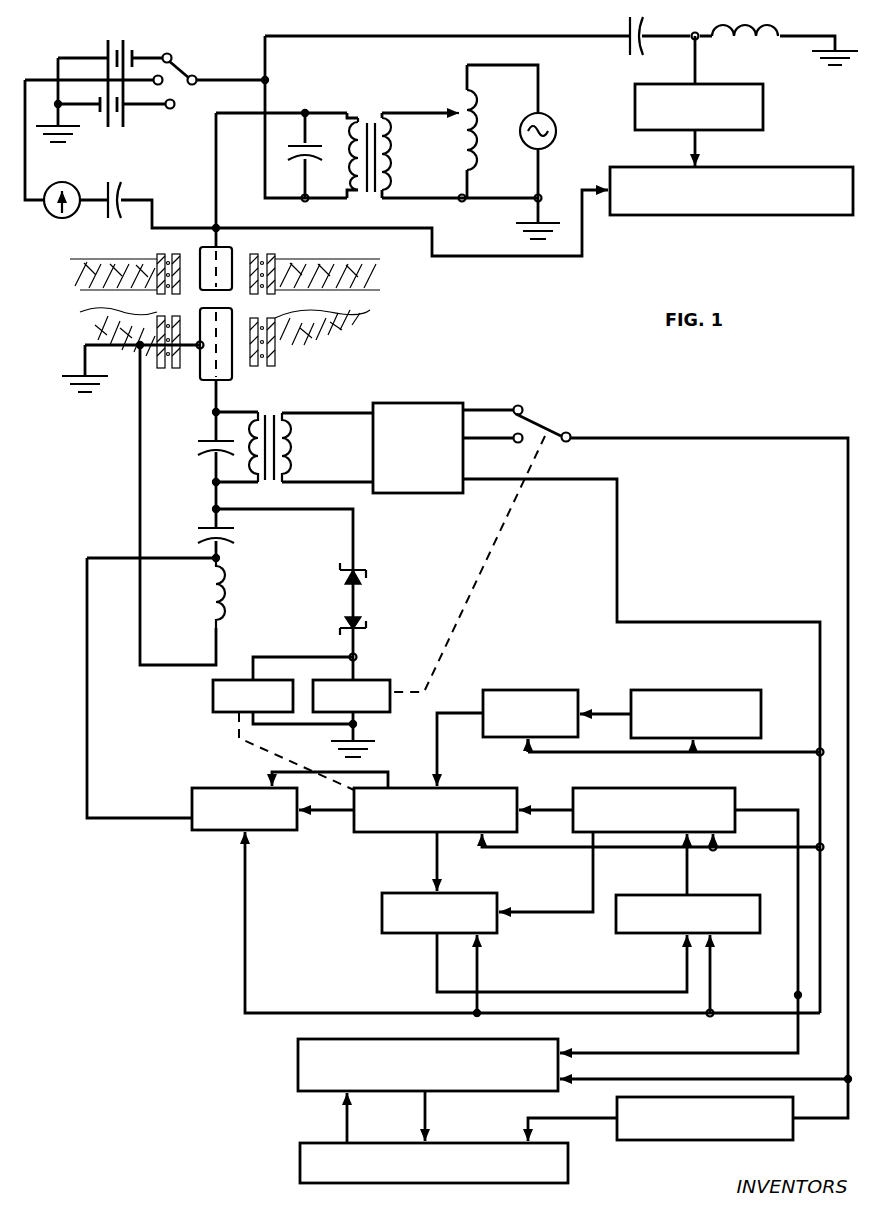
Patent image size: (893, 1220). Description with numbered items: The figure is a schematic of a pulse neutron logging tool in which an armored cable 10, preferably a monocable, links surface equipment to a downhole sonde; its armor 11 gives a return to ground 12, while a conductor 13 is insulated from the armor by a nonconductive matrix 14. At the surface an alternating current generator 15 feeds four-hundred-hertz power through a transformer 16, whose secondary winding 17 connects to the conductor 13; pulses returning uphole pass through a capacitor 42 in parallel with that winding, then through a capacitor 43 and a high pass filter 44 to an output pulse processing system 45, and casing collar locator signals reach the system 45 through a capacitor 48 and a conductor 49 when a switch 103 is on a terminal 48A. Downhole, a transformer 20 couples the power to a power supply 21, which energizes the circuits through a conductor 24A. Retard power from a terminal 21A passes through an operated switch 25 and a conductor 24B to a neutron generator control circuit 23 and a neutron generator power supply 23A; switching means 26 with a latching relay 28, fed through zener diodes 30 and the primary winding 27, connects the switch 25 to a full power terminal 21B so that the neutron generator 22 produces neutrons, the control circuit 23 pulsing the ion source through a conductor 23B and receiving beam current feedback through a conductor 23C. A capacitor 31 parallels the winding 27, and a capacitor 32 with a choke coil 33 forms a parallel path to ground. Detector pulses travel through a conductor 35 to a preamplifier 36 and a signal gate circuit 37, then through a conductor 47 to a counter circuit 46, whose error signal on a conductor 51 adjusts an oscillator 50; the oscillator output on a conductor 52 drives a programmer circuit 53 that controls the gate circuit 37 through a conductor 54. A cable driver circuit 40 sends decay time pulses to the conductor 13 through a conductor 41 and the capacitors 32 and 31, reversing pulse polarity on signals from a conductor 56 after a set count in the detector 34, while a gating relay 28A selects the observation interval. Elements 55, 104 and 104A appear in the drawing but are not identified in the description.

The armored cable 10 is at (237, 341).
The armor 11 is at (200, 330).
The ground 12 is at (88, 389).
The conductor 13 is at (215, 178).
The nonconductive matrix 14 is at (240, 290).
The alternating current generator 15 is at (557, 130).
The transformer 16 is at (368, 118).
The secondary winding 17 is at (350, 174).
The transformer 20 is at (280, 405).
The power supply 21 is at (438, 403).
The power supply terminal 21A is at (497, 405).
The power supply output terminal 21B is at (500, 441).
The neutron generator 22 is at (435, 1184).
The neutron generator control circuit 23 is at (298, 1061).
The neutron generator power supply 23A is at (702, 1136).
The conductor 23B is at (424, 1113).
The conductor 23C is at (345, 1117).
The conductor 24A is at (655, 622).
The conductor 24B is at (730, 437).
The switch 25 is at (530, 420).
The switching means 26 is at (366, 682).
The primary winding 27 is at (240, 462).
The latching relay 28 is at (384, 713).
The gating relay 28A is at (213, 694).
The zener diodes 30 is at (356, 569).
The capacitor 31 is at (200, 449).
The capacitor 32 is at (200, 539).
The choke coil 33 is at (200, 598).
The detector 34 is at (740, 690).
The conductor 35 is at (612, 712).
The preamplifier 36 is at (560, 689).
The signal gate circuit 37 is at (362, 833).
The cable driver circuit 40 is at (192, 806).
The conductor 41 is at (87, 712).
The capacitor 42 is at (300, 150).
The capacitor 43 is at (626, 45).
The high pass filter 44 is at (758, 117).
The output pulse processing system 45 is at (757, 215).
The counter circuit 46 is at (396, 925).
The conductor 47 is at (436, 856).
The capacitor 48 is at (106, 208).
The terminal 48A is at (163, 84).
The conductor 49 is at (536, 258).
The oscillator 50 is at (720, 935).
The conductor 51 is at (635, 992).
The conductor 52 is at (686, 856).
The programmer circuit 53 is at (682, 795).
The conductor 54 is at (540, 806).
The lead 55 is at (548, 910).
The conductor 56 is at (268, 772).
The switch 103 is at (182, 63).
The battery 104 is at (113, 124).
The battery 104A is at (123, 41).